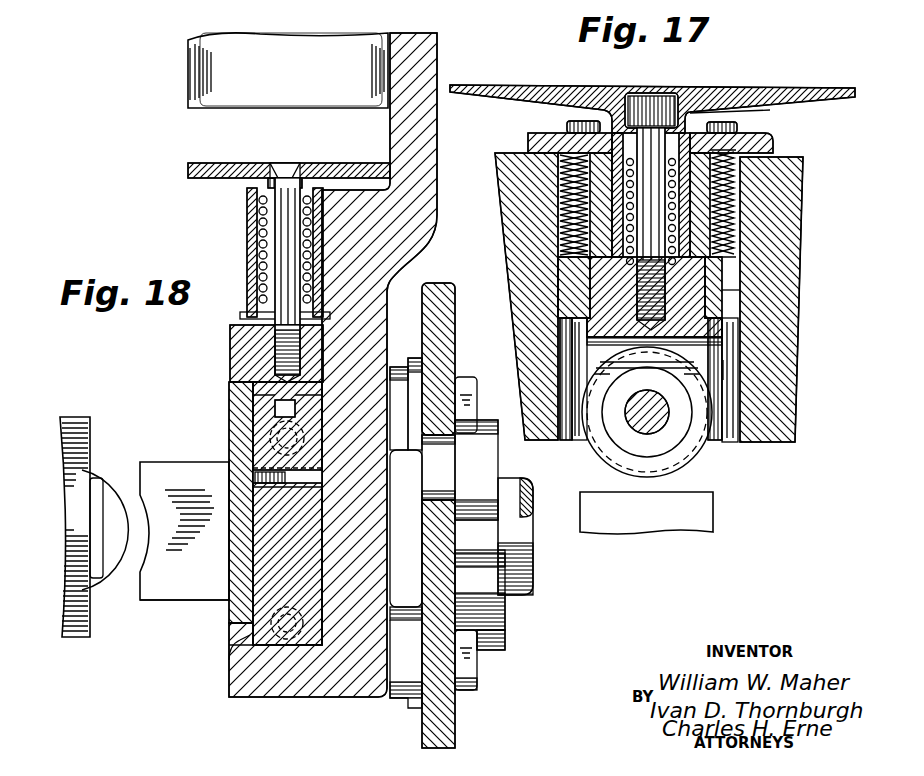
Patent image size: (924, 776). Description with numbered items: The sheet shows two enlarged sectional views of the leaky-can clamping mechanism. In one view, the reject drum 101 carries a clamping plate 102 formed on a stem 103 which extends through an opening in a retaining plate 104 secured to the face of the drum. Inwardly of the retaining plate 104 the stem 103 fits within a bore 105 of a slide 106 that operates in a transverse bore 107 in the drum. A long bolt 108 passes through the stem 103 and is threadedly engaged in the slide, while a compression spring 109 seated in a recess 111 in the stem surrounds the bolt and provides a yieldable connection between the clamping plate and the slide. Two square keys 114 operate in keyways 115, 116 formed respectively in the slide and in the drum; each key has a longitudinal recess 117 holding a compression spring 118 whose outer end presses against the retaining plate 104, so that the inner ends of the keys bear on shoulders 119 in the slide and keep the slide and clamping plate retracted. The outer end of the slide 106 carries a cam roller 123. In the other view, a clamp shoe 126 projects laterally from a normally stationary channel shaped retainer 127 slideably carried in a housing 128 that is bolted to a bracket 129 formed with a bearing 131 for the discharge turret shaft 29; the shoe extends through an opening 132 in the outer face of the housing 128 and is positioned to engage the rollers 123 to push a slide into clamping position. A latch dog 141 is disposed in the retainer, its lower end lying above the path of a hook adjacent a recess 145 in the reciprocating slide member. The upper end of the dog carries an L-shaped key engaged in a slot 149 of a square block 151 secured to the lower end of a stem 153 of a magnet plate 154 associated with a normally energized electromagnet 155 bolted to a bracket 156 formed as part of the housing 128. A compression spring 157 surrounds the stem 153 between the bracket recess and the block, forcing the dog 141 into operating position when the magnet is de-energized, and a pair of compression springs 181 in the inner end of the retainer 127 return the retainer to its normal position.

In FIG. 18, the discharge turret shaft 29 is at (522, 567).
In FIG. 18, the reject drum 101 is at (80, 637).
In FIG. 17, the clamping plate 102 is at (557, 85).
In FIG. 17, the stem 103 is at (700, 115).
In FIG. 17, the retaining plate 104 is at (758, 146).
In FIG. 17, the bore 105 is at (735, 280).
In FIG. 18, the slide 106 is at (97, 576).
In FIG. 17, the transverse bore 107 is at (728, 372).
In FIG. 17, the bolt 108 is at (655, 97).
In FIG. 17, the compression spring 109 is at (746, 232).
In FIG. 17, the recess 111 is at (746, 178).
In FIG. 17, the square key 114 is at (592, 272).
In FIG. 17, the keyway 115 is at (586, 293).
In FIG. 17, the keyway 116 is at (573, 362).
In FIG. 17, the longitudinal recess 117 is at (558, 186).
In FIG. 17, the compression spring 118 is at (560, 212).
In FIG. 17, the shoulder 119 is at (578, 330).
In FIG. 18, the cam roller 123 is at (103, 482).
In FIG. 18, the clamp shoe 126 is at (185, 585).
In FIG. 18, the retainer 127 is at (232, 682).
In FIG. 18, the housing 128 is at (350, 690).
In FIG. 18, the bracket 129 is at (445, 706).
In FIG. 18, the bearing 131 is at (502, 627).
In FIG. 18, the opening 132 is at (226, 621).
In FIG. 18, the latch dog 141 is at (262, 420).
In FIG. 18, the recess 145 is at (270, 494).
In FIG. 18, the slot 149 is at (270, 396).
In FIG. 18, the square block 151 is at (253, 337).
In FIG. 18, the stem 153 is at (286, 240).
In FIG. 18, the magnet plate 154 is at (188, 170).
In FIG. 18, the electromagnet 155 is at (288, 70).
In FIG. 18, the bracket 156 is at (418, 130).
In FIG. 18, the compression spring 157 is at (262, 216).
In FIG. 18, the compression spring 181 is at (265, 437).